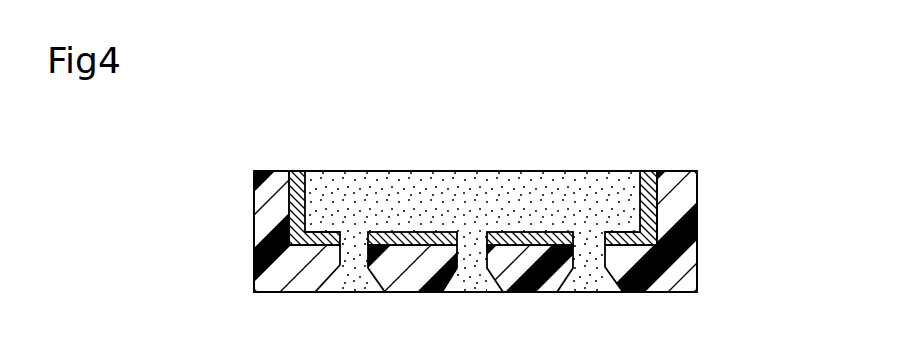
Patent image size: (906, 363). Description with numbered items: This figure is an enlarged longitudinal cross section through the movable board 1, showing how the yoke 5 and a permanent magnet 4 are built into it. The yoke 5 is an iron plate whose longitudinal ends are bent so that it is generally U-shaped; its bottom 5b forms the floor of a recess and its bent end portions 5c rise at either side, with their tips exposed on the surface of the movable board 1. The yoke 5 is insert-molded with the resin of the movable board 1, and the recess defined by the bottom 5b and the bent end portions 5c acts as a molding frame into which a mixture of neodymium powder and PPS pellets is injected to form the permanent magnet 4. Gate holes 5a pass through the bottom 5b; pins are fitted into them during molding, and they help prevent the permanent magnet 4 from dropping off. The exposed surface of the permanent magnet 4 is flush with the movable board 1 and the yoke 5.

The movable board 1 is at (251, 277).
The permanent magnet 4 is at (519, 190).
The yoke 5 is at (290, 198).
The gate hole 5a is at (577, 262).
The bottom 5b is at (305, 193).
The bent end portion 5c is at (276, 190).